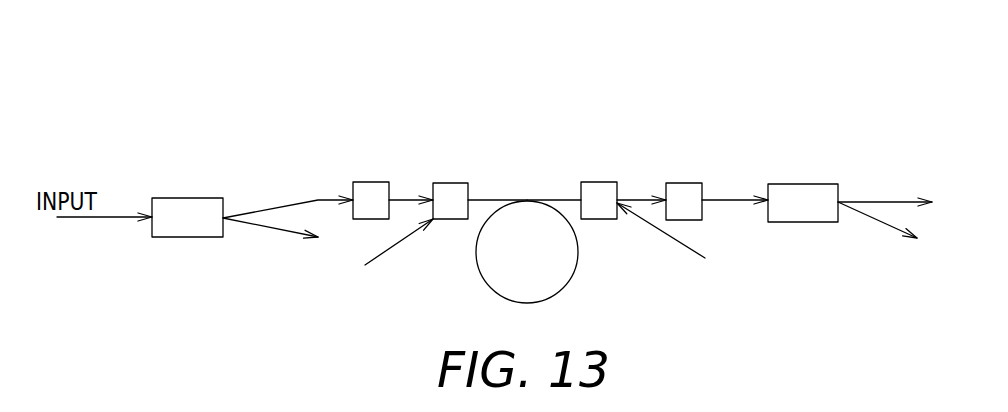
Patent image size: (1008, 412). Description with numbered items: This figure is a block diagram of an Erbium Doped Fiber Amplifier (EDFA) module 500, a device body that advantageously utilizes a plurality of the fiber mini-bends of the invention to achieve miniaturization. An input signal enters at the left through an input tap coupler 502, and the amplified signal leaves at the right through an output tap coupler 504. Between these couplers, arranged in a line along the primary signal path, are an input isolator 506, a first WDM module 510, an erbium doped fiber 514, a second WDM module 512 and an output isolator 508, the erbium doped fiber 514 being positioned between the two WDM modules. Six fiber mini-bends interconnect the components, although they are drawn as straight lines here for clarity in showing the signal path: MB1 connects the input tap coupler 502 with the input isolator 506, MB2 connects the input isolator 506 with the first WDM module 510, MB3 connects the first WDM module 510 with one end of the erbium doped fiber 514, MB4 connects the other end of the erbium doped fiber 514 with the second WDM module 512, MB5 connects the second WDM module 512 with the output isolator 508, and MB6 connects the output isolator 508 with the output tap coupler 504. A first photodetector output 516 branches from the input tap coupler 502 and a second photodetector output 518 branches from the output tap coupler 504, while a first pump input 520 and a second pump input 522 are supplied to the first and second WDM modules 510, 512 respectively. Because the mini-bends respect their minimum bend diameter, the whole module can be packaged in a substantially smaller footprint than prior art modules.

The EDFA module 500 is at (673, 83).
The input tap coupler 502 is at (177, 198).
The output tap coupler 504 is at (815, 184).
The input isolator 506 is at (365, 182).
The output isolator 508 is at (687, 183).
The first WDM module 510 is at (447, 181).
The second WDM module 512 is at (603, 182).
The erbium doped fiber 514 is at (565, 223).
The first photodetector output 516 is at (273, 228).
The second photodetector output 518 is at (880, 230).
The first pump input 520 is at (392, 243).
The second pump input 522 is at (665, 238).
The fiber mini-bend MB1 is at (270, 208).
The fiber mini-bend MB2 is at (402, 196).
The fiber mini-bend MB3 is at (482, 198).
The fiber mini-bend MB4 is at (556, 198).
The fiber mini-bend MB5 is at (642, 198).
The fiber mini-bend MB6 is at (719, 198).